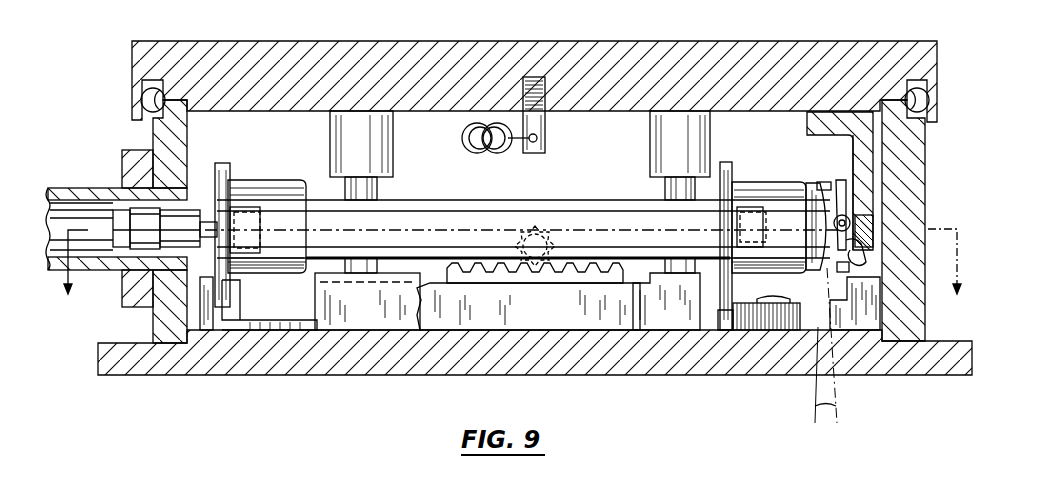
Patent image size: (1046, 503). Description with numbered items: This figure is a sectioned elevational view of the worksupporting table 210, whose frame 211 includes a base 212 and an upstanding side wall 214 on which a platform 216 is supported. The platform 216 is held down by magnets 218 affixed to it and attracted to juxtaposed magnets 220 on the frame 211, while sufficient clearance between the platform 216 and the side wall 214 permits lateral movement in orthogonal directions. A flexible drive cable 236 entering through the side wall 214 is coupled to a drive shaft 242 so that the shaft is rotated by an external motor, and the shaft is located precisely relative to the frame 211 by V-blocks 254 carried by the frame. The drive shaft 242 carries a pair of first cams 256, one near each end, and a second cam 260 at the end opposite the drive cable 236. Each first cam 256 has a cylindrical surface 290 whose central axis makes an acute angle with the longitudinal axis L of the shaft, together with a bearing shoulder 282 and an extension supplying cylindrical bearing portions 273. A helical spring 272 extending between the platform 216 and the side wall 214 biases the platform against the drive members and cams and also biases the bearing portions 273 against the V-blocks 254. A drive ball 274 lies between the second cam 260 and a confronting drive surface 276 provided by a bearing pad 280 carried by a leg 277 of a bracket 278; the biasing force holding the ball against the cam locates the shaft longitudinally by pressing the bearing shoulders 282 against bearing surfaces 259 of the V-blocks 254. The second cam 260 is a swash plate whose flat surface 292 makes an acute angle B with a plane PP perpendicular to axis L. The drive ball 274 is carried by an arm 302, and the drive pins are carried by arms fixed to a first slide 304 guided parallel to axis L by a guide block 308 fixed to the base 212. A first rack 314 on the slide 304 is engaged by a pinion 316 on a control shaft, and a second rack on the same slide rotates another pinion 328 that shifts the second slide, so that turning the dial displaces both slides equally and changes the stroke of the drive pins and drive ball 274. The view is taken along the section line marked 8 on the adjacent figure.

The worksupporting table 210 is at (157, 36).
The frame 211 is at (146, 146).
The base 212 is at (112, 352).
The side wall 214 is at (165, 128).
The platform 216 is at (376, 24).
The magnets 218 is at (335, 134).
The magnets 220 is at (379, 183).
The flexible drive cable 236 is at (97, 248).
The drive shaft 242 is at (475, 202).
The V-blocks 254 is at (226, 297).
The first cams 256 is at (285, 217).
The bearing surfaces 259 is at (232, 204).
The second cam 260 is at (828, 183).
The helical spring 272 is at (464, 134).
The cylindrical bearing portions 273 is at (214, 180).
The drive ball 274 is at (843, 186).
The drive surface 276 is at (862, 259).
The leg 277 is at (862, 150).
The bracket 278 is at (807, 122).
The bearing pad 280 is at (878, 208).
The bearing shoulders 282 is at (227, 258).
The cylindrical surface 290 is at (290, 181).
The flat surface 292 is at (843, 273).
The arm 302 is at (877, 283).
The first slide 304 is at (547, 318).
The guide block 308 is at (418, 304).
The first rack 314 is at (493, 263).
The pinion 316 is at (548, 246).
The pinion 328 is at (758, 318).
The section line 8 is at (511, 271).
The longitudinal axis L is at (462, 226).
The plane PP is at (815, 407).
The acute angle B is at (821, 417).